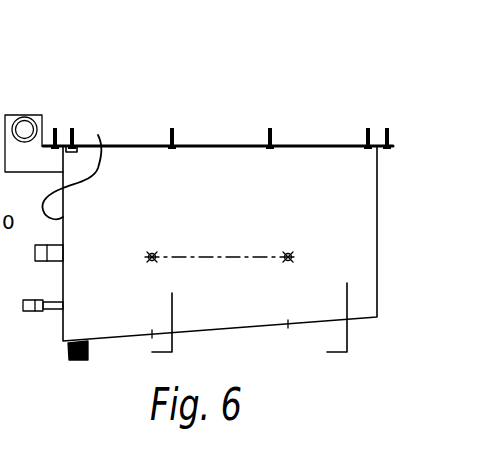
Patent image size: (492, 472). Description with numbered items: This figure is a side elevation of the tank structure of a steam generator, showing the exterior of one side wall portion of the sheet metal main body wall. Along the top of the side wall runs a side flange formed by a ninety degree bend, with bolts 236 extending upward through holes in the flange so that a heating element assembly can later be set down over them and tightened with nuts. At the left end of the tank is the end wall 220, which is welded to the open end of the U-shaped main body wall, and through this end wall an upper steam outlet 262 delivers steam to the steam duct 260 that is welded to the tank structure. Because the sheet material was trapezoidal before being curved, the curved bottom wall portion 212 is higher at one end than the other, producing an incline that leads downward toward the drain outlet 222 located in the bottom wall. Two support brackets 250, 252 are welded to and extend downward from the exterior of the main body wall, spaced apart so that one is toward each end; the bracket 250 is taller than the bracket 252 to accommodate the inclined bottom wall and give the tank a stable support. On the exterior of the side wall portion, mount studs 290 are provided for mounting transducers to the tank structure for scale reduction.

The curved bottom wall portion 212 is at (237, 328).
The tank end wall 220 is at (98, 135).
The drain outlet 222 is at (78, 340).
The bolts 236 is at (388, 130).
The support bracket 250 is at (347, 300).
The support bracket 252 is at (173, 312).
The steam duct 260 is at (24, 105).
The upper steam outlet 262 is at (66, 163).
The mount studs 290 is at (153, 253).